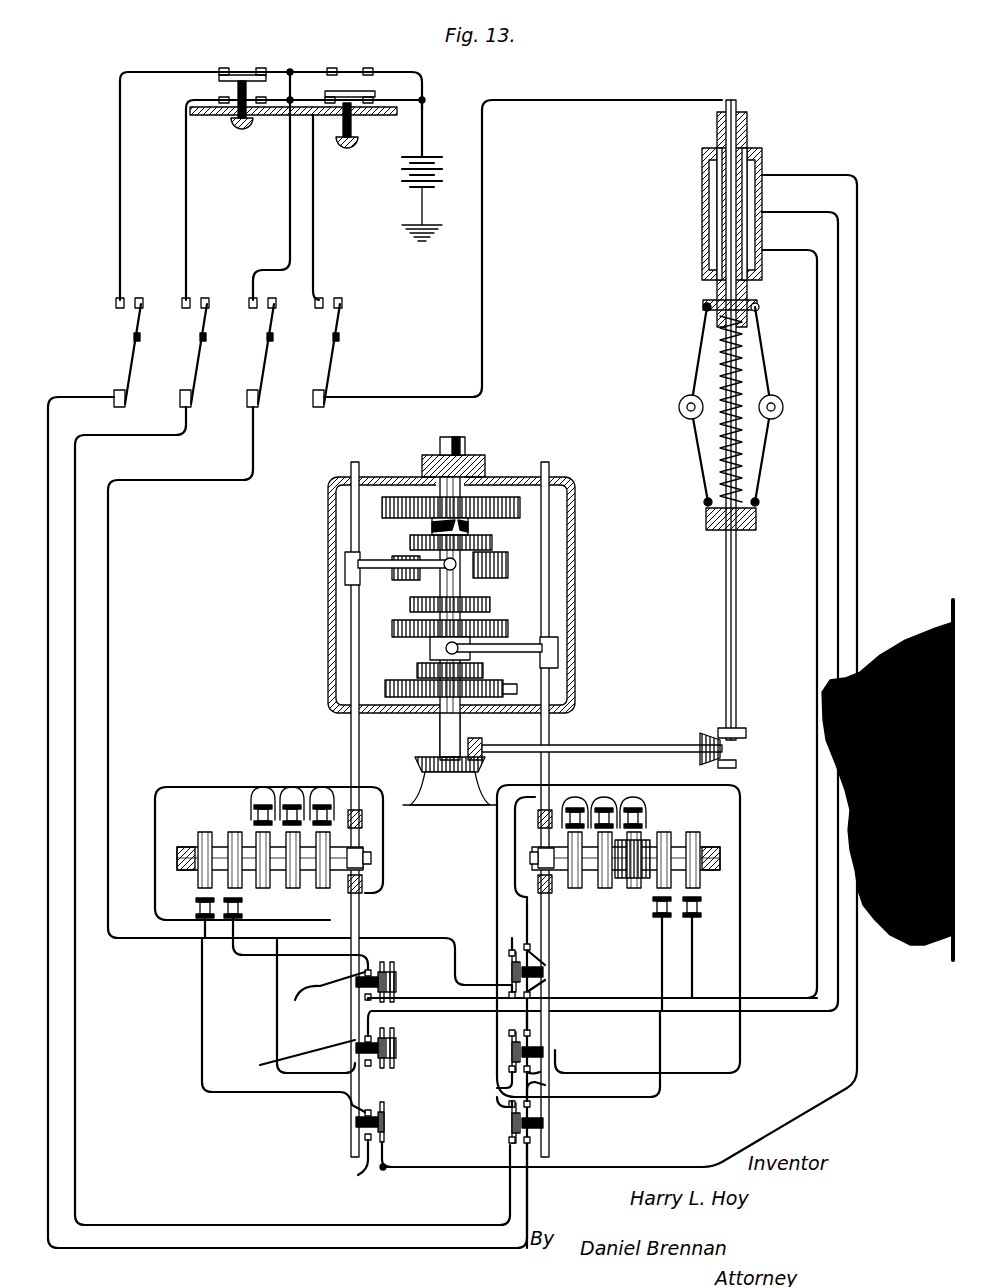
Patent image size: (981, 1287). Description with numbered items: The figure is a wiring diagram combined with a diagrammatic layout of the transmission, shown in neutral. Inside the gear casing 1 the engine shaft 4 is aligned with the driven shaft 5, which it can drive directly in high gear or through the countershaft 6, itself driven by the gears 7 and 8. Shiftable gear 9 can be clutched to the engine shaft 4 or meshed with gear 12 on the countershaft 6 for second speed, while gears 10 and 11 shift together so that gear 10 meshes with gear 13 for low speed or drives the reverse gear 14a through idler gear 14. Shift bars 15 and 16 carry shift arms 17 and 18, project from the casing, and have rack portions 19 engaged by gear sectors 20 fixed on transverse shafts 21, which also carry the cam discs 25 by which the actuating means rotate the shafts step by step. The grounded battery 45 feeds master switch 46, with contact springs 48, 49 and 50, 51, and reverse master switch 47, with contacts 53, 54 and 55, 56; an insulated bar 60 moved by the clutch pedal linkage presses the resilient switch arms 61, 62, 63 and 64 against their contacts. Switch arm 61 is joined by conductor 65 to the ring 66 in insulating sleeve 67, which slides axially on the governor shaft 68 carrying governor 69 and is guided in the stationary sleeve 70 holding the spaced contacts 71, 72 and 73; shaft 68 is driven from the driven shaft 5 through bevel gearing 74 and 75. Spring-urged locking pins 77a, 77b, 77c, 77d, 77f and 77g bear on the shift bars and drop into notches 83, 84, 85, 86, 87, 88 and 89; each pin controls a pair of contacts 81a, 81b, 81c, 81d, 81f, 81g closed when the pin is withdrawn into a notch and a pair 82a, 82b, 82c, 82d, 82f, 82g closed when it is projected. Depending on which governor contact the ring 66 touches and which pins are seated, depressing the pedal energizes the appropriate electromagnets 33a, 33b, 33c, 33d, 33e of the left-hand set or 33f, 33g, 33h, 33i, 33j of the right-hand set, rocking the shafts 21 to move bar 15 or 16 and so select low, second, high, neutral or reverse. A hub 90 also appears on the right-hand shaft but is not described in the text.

The transmission gear casing 1 is at (330, 556).
The engine shaft 4 is at (442, 440).
The driven shaft 5 is at (438, 738).
The countershaft 6 is at (438, 590).
The gear 7 is at (440, 520).
The gear 8 is at (392, 497).
The shiftable gear 9 is at (492, 542).
The shiftable gear 10 is at (500, 637).
The shiftable gear 11 is at (484, 668).
The gear 12 is at (500, 575).
The gear 13 is at (490, 604).
The idler gear 14 is at (390, 684).
The reverse gear 14a is at (518, 690).
The shift bar 15 is at (350, 620).
The shift bar 16 is at (552, 570).
The shift arm 17 is at (360, 562).
The shift arm 18 is at (548, 638).
The rack portion 19 is at (362, 818).
The gear sector 20 is at (362, 882).
The transverse shaft 21 is at (364, 856).
The cam discs 25 is at (232, 832).
The electromagnet 33a is at (196, 906).
The electromagnet 33b is at (233, 930).
The electromagnet 33c is at (262, 800).
The electromagnet 33d is at (292, 800).
The electromagnet 33e is at (337, 775).
The electromagnet 33f is at (578, 806).
The electromagnet 33g is at (608, 812).
The electromagnet 33h is at (640, 812).
The electromagnet 33i is at (658, 915).
The electromagnet 33j is at (705, 947).
The battery 45 is at (420, 192).
The master switch 46 is at (347, 148).
The reverse master switch 47 is at (240, 128).
The contact spring 48 is at (332, 68).
The contact spring 49 is at (370, 68).
The contact spring 50 is at (328, 97).
The contact spring 51 is at (372, 98).
The contact 53 is at (222, 68).
The contact 54 is at (262, 68).
The contact 55 is at (218, 98).
The contact 56 is at (262, 97).
The transverse bar 60 is at (339, 340).
The switch arm 61 is at (327, 368).
The switch arm 62 is at (260, 368).
The switch arm 63 is at (193, 368).
The switch arm 64 is at (126, 368).
The conductor 65 is at (478, 362).
The contact ring 66 is at (765, 165).
The insulating sleeve 67 is at (748, 116).
The governor shaft 68 is at (733, 110).
The governor 69 is at (680, 420).
The stationary insulating sleeve 70 is at (720, 175).
The metallic contact 71 is at (716, 168).
The metallic contact 72 is at (705, 225).
The metallic contact 73 is at (705, 265).
The bevel gear 74 is at (480, 762).
The bevel gear 75 is at (738, 746).
The locking pin 77a is at (352, 1132).
The locking pin 77b is at (356, 1047).
The locking pin 77c is at (356, 980).
The locking pin 77d is at (545, 1124).
The locking pin 77f is at (545, 1052).
The locking pin 77g is at (545, 972).
The contact springs 81a is at (360, 1114).
The contact springs 81b is at (320, 1042).
The contact springs 81c is at (295, 1000).
The contact springs 81d is at (532, 1105).
The contact springs 81f is at (532, 1040).
The contact springs 81g is at (530, 948).
The contact springs 82a is at (386, 1120).
The contact springs 82b is at (396, 1039).
The contact springs 82c is at (591, 982).
The contact springs 82d is at (509, 1115).
The contact springs 82f is at (509, 1036).
The contact springs 82g is at (509, 956).
The innermost notch 83 is at (530, 966).
The second notch 84 is at (555, 1073).
The notch 85 is at (378, 938).
The notch 86 is at (275, 1092).
The notch 87 is at (360, 1070).
The notch 88 is at (509, 1104).
The end notch 89 is at (352, 1150).
The gear hub 90 is at (628, 890).